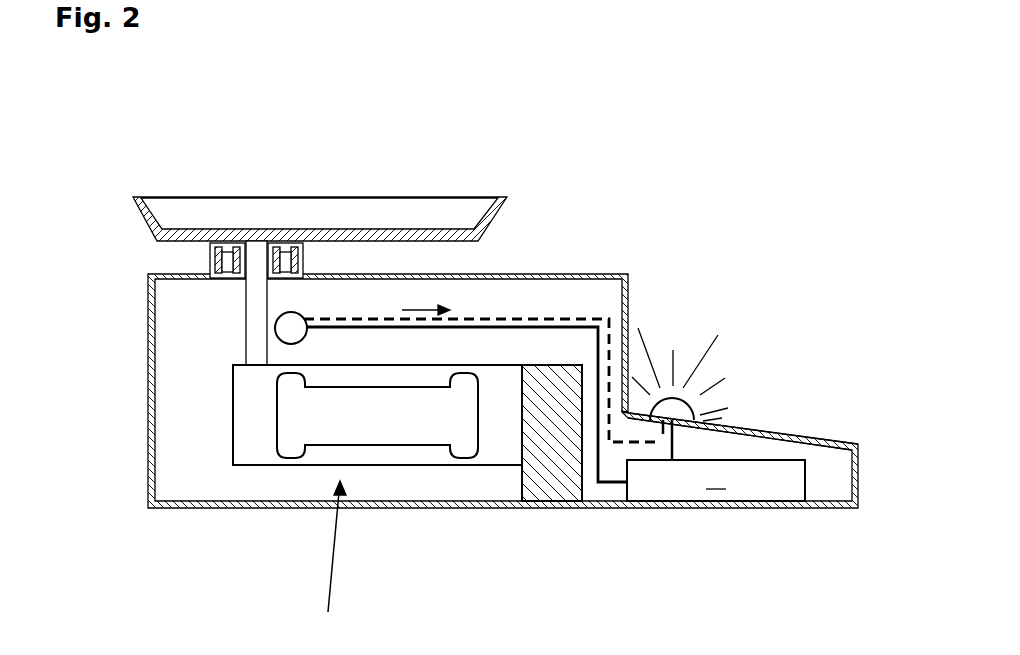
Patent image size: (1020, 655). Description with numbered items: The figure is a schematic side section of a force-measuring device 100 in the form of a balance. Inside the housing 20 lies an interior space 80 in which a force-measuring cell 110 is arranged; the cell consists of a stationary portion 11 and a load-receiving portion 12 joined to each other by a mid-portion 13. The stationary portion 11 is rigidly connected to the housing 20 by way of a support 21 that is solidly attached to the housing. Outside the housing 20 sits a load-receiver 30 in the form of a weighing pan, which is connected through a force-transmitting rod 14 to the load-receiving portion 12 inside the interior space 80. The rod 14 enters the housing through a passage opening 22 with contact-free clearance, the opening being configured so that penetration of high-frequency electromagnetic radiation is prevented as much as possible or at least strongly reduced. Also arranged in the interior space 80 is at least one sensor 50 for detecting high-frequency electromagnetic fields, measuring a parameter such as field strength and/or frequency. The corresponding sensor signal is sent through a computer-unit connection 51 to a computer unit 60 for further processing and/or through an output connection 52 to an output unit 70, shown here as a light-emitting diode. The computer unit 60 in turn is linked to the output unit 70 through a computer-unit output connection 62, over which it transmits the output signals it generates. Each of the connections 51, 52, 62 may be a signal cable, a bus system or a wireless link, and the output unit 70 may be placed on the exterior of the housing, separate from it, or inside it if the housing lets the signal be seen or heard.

The force-measuring device 100 is at (118, 162).
The load-receiver 30 is at (207, 210).
The passage opening 22 is at (213, 252).
The force-transmitting rod 14 is at (255, 312).
The sensor 50 is at (273, 332).
The computer-unit connection 51 is at (541, 325).
The output connection 52 is at (578, 320).
The output unit 70 is at (675, 395).
The computer-unit output connection 62 is at (673, 443).
The computer unit 60 is at (716, 480).
The interior space 80 is at (182, 425).
The housing 20 is at (200, 503).
The load-receiving portion 12 is at (258, 425).
The force-measuring cell 110 is at (333, 562).
The mid-portion 13 is at (380, 457).
The stationary portion 11 is at (495, 445).
The support 21 is at (545, 455).